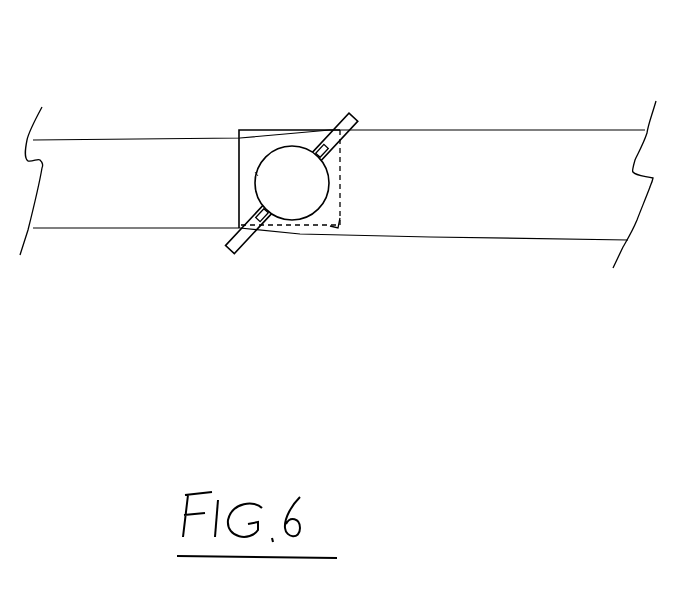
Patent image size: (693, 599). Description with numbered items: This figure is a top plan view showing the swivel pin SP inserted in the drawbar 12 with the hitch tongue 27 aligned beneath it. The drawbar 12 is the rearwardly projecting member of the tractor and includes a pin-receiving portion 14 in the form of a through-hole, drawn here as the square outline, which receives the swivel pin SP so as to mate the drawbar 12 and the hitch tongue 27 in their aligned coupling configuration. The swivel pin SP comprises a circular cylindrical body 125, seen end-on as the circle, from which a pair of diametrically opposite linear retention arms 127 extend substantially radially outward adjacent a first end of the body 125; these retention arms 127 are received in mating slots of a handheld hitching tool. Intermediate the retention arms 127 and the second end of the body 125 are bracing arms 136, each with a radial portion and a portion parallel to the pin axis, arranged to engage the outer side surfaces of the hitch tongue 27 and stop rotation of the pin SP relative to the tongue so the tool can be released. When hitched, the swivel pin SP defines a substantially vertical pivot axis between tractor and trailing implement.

The drawbar 12 is at (127, 137).
The hitch tongue 27 is at (450, 130).
The pin-receiving portion 14 is at (342, 224).
The circular cylindrical body 125 is at (293, 198).
The retention arms 127 is at (313, 143).
The bracing arm 136 is at (339, 116).
The swivel pin SP is at (254, 172).